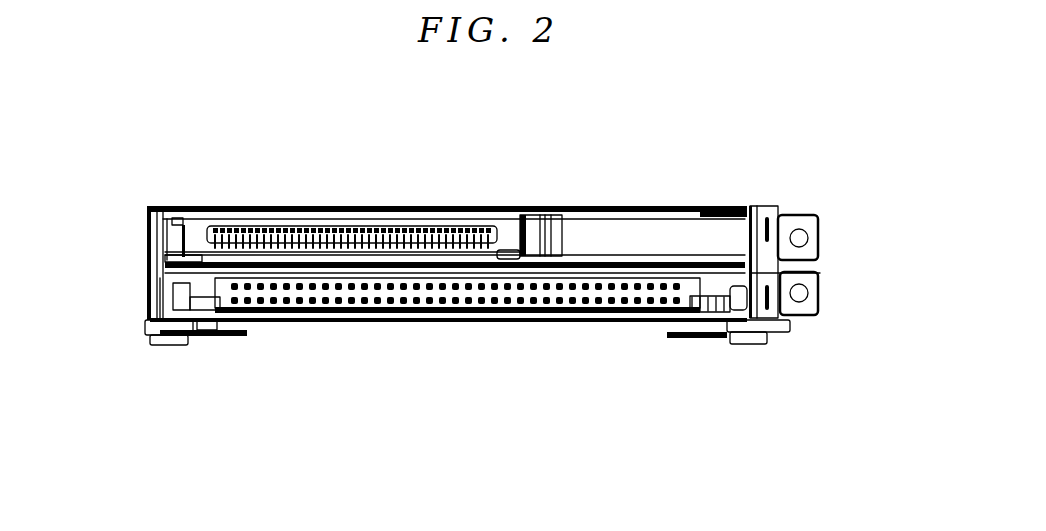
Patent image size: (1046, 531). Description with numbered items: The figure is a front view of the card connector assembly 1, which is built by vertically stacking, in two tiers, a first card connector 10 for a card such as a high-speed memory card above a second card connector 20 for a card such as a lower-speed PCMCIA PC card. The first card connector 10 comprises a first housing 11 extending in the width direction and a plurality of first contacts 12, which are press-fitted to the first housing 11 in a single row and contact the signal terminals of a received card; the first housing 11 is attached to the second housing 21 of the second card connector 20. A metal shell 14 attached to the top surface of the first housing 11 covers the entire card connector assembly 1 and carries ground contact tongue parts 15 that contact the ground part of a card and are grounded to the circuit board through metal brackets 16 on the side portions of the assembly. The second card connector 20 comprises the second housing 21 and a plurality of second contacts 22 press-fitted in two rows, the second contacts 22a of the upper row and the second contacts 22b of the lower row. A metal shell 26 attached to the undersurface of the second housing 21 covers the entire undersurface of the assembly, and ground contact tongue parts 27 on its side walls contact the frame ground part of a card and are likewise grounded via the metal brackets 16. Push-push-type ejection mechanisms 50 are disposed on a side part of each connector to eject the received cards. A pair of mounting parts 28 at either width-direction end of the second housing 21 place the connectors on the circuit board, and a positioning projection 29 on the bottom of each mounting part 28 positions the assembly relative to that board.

The card connector assembly 1 is at (724, 156).
The first card connector 10 is at (483, 198).
The first housing 11 is at (548, 214).
The first contacts 12 is at (456, 224).
The metal shell 14 is at (606, 206).
The ground contact tongue parts 15 is at (206, 206).
The metal brackets 16 is at (195, 334).
The second card connector 20 is at (573, 322).
The second housing 21 is at (820, 275).
The second contacts 22 is at (481, 350).
The second contacts of the upper row 22a is at (395, 291).
The second contacts of the lower row 22b is at (400, 303).
The metal shell 26 is at (493, 323).
The ground contact tongue parts 27 is at (182, 296).
The mounting parts 28 is at (147, 328).
The positioning projection 29 is at (168, 345).
The ejection mechanisms 50 is at (824, 223).